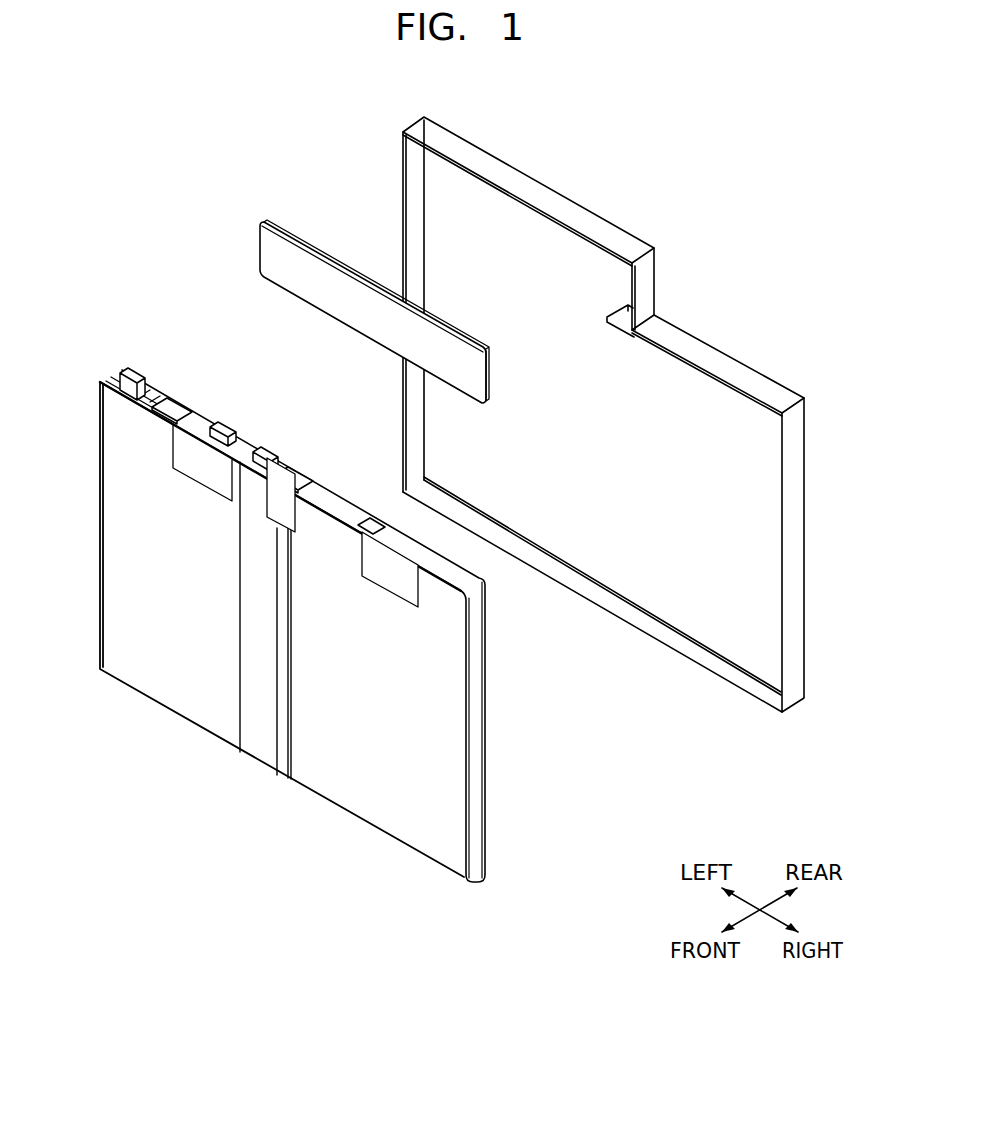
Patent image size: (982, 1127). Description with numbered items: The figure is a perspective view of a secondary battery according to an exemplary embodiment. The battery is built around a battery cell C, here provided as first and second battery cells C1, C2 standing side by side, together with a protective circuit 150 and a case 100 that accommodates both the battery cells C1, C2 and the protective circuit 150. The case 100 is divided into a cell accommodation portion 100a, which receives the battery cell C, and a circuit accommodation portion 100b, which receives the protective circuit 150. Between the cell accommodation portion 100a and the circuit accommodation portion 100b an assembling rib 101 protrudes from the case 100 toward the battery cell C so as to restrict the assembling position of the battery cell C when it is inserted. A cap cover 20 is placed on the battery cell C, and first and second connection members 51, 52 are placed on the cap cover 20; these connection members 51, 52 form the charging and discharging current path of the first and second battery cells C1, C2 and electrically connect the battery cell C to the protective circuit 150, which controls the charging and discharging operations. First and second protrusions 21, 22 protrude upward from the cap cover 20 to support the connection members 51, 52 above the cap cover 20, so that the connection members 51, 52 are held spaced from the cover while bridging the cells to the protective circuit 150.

The case 100 is at (603, 414).
The cell accommodation portion 100a is at (675, 583).
The circuit accommodation portion 100b is at (520, 237).
The assembling rib 101 is at (620, 318).
The protective circuit 150 is at (312, 248).
The cap cover 20 is at (300, 608).
The first protrusion 21 is at (177, 402).
The second protrusion 22 is at (108, 380).
The first connection member 51 is at (400, 542).
The second connection member 52 is at (225, 418).
The battery cell C is at (292, 632).
The first battery cell C1 is at (375, 822).
The second battery cell C2 is at (170, 705).